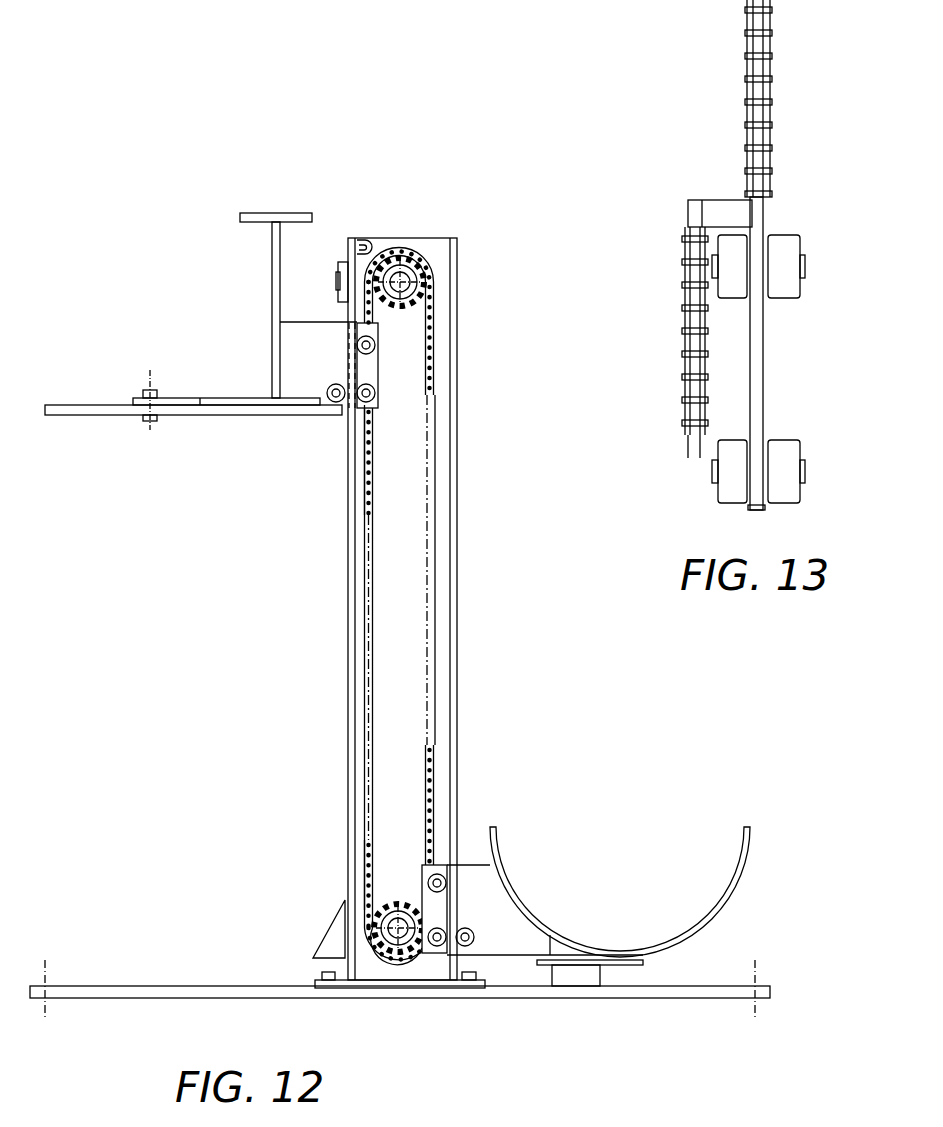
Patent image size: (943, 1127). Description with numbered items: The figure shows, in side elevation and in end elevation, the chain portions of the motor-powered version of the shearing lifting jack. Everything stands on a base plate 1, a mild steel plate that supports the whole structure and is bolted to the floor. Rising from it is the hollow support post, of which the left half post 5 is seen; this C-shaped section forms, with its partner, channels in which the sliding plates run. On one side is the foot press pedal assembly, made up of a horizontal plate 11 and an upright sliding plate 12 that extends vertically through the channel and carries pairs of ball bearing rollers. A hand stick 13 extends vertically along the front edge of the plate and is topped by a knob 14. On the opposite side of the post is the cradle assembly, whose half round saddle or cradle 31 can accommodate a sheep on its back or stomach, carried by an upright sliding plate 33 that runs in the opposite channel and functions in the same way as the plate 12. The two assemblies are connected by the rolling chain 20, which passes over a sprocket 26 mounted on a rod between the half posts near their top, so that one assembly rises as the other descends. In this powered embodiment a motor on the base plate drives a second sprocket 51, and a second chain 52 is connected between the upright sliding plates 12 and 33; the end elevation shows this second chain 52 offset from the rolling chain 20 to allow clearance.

In FIG. 12, the base plate 1 is at (148, 985).
In FIG. 12, the left half post 5 is at (430, 245).
In FIG. 12, the horizontal plate 11 is at (86, 410).
In FIG. 12, the upright sliding plate 12 is at (300, 345).
In FIG. 13, the upright sliding plate 12 is at (757, 415).
In FIG. 12, the hand stick 13 is at (275, 250).
In FIG. 12, the knob 14 is at (258, 213).
In FIG. 12, the rolling chain 20 is at (437, 372).
In FIG. 13, the rolling chain 20 is at (748, 68).
In FIG. 12, the sprocket 26 is at (430, 292).
In FIG. 12, the half round saddle or cradle 31 is at (685, 928).
In FIG. 12, the upright sliding plate 33 is at (485, 897).
In FIG. 12, the second sprocket 51 is at (378, 910).
In FIG. 12, the second chain 52 is at (368, 468).
In FIG. 13, the second chain 52 is at (688, 418).